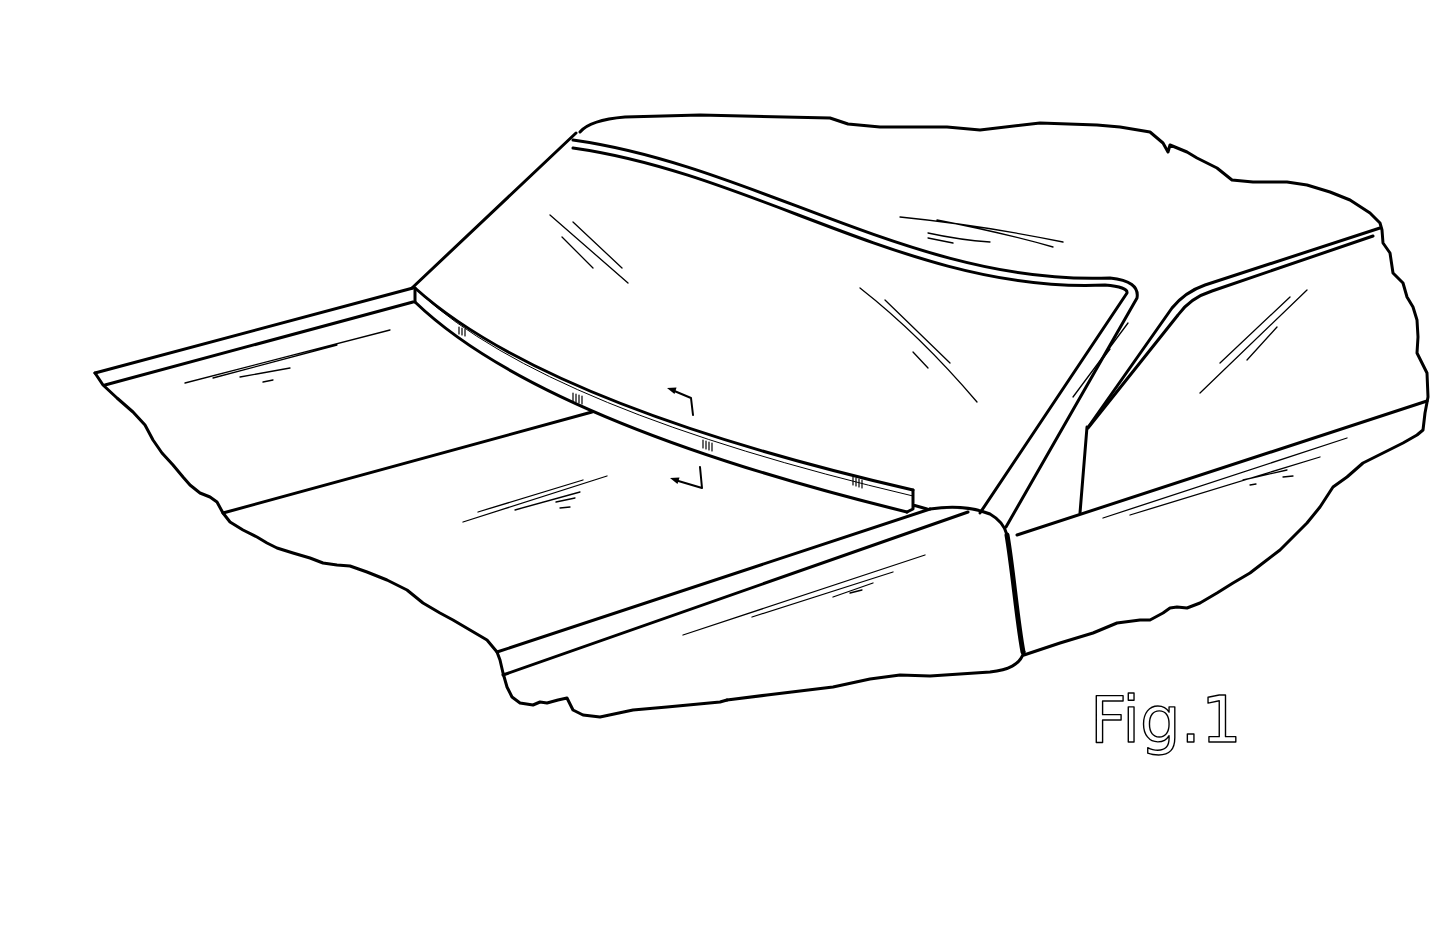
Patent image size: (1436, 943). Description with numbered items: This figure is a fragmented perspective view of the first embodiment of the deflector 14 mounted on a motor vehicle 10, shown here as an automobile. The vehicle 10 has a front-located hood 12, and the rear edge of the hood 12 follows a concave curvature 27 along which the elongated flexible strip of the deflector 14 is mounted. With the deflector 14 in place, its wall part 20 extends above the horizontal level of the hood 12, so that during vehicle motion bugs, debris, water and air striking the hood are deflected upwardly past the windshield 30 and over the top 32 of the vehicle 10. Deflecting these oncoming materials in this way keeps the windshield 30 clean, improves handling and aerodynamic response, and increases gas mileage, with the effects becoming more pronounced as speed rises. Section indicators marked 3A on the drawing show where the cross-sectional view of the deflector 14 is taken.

The motor vehicle 10 is at (1043, 115).
The hood 12 is at (335, 333).
The deflector 14 is at (448, 300).
The wall part 20 is at (825, 477).
The concave curvature 27 is at (537, 340).
The windshield 30 is at (621, 194).
The top 32 is at (841, 121).
The section line 3A is at (683, 441).